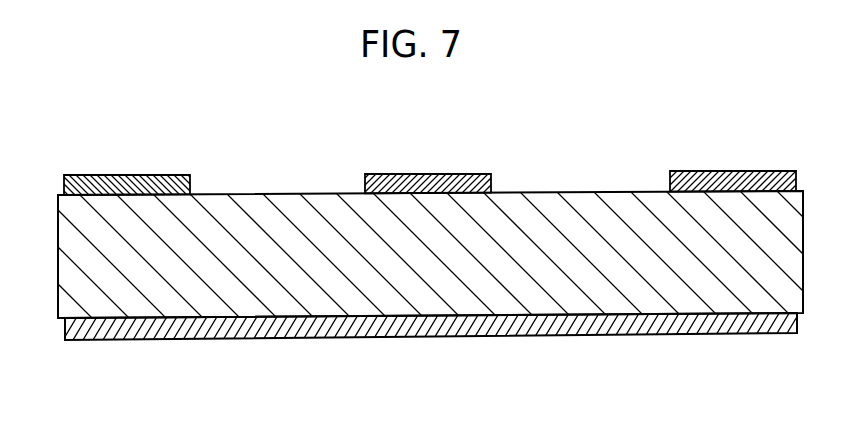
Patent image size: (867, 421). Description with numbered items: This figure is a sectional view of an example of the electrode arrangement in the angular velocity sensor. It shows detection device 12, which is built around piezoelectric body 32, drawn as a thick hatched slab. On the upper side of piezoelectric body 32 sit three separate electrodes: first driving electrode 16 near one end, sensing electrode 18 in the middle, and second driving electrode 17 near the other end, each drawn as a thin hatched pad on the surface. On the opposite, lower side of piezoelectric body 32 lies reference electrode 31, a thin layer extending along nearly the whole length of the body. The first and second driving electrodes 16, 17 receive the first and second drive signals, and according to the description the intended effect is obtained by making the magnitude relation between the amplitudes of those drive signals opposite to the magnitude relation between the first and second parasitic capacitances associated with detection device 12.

The detection device 12 is at (433, 256).
The first driving electrode 16 is at (132, 175).
The second driving electrode 17 is at (732, 171).
The sensing electrode 18 is at (420, 174).
The reference electrode 31 is at (407, 338).
The piezoelectric body 32 is at (490, 292).